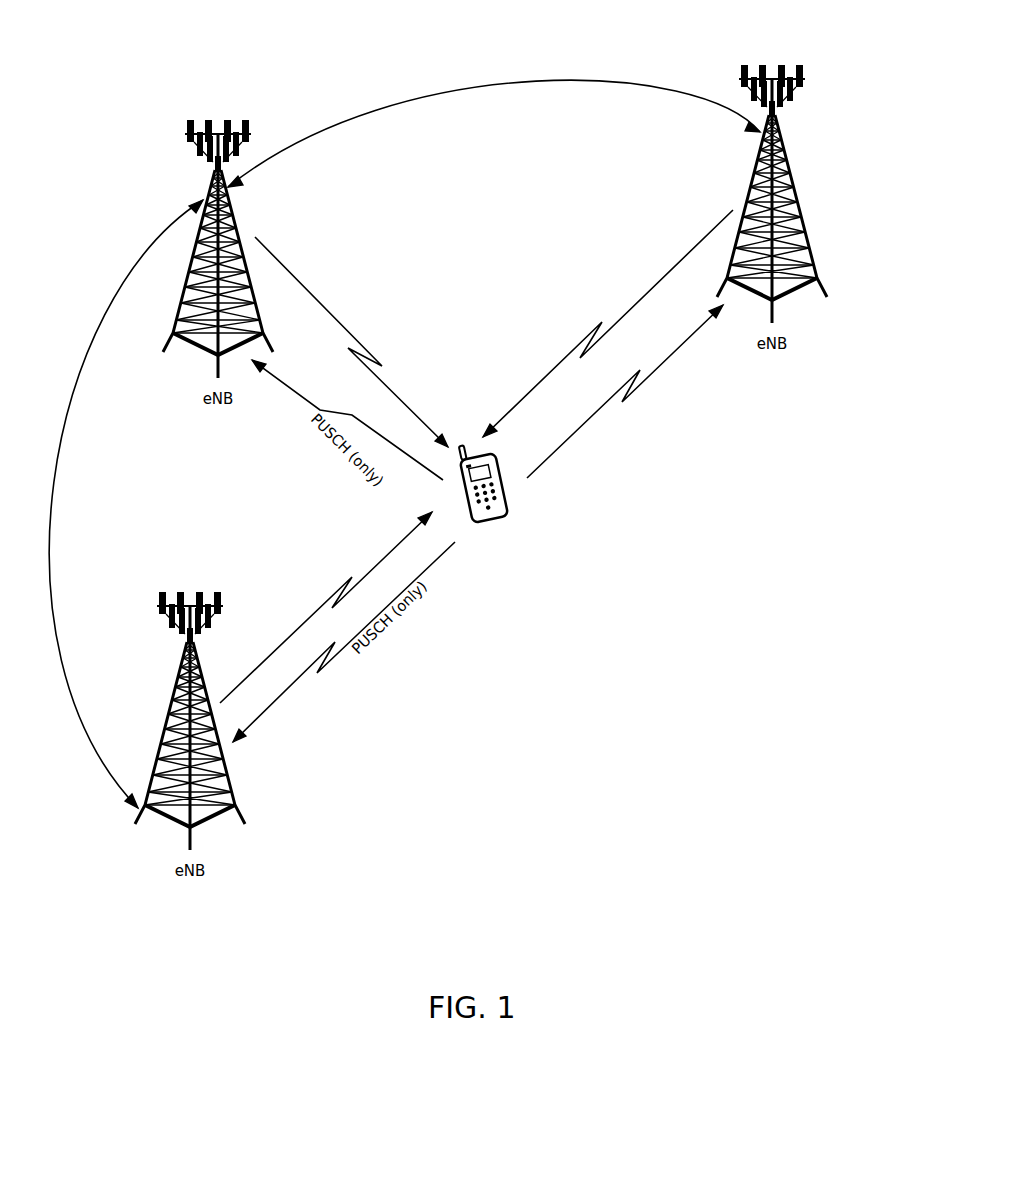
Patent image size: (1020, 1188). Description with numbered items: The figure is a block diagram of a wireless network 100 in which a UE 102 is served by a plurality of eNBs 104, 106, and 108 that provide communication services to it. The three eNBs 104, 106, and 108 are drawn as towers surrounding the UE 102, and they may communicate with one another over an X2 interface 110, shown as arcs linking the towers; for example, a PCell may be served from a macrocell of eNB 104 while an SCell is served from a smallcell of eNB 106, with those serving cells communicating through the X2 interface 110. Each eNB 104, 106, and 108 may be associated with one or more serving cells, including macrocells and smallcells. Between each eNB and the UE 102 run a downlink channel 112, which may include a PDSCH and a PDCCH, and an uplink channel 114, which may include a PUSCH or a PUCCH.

The wireless network 100 is at (483, 640).
The UE 102 is at (492, 525).
The eNB 104 is at (808, 80).
The eNB 106 is at (172, 158).
The eNB 108 is at (165, 592).
The X2 interface 110 is at (560, 77).
The downlink channel 112 is at (313, 290).
The uplink channel 114 is at (577, 437).